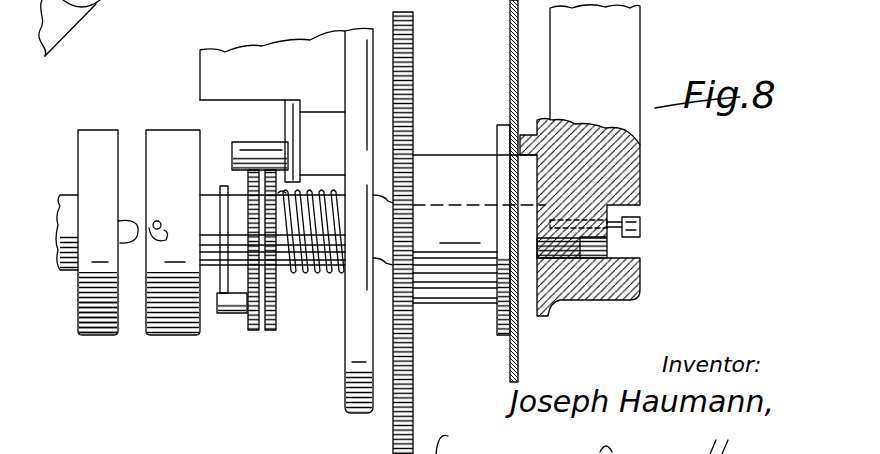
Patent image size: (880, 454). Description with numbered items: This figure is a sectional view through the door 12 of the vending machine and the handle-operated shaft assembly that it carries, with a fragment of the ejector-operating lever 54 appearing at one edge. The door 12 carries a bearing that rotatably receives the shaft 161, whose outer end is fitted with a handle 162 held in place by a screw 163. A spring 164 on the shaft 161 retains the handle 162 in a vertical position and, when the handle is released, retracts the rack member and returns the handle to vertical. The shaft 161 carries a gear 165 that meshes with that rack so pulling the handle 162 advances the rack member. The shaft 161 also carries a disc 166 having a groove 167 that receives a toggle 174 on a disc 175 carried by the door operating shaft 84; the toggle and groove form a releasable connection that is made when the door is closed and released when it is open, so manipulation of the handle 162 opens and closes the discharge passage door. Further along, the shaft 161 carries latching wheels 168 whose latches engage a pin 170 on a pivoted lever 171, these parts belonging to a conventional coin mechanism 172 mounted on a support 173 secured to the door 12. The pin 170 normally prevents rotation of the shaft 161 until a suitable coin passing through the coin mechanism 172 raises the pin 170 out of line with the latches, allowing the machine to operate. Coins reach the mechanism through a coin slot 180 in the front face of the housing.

The door 12 is at (511, 65).
The lever 54 is at (70, 30).
The door operating shaft 84 is at (68, 196).
The shaft 161 is at (208, 203).
The handle 162 is at (640, 172).
The screw 163 is at (640, 225).
The spring 164 is at (295, 273).
The gear 165 is at (413, 99).
The disc 166 is at (183, 130).
The groove 167 is at (158, 221).
The latching wheels 168 is at (255, 333).
The pin 170 is at (252, 145).
The pivoted lever 171 is at (290, 120).
The coin mechanism 172 is at (300, 50).
The support 173 is at (345, 393).
The toggle 174 is at (122, 230).
The disc 175 is at (95, 337).
The coin slot 180 is at (462, 172).